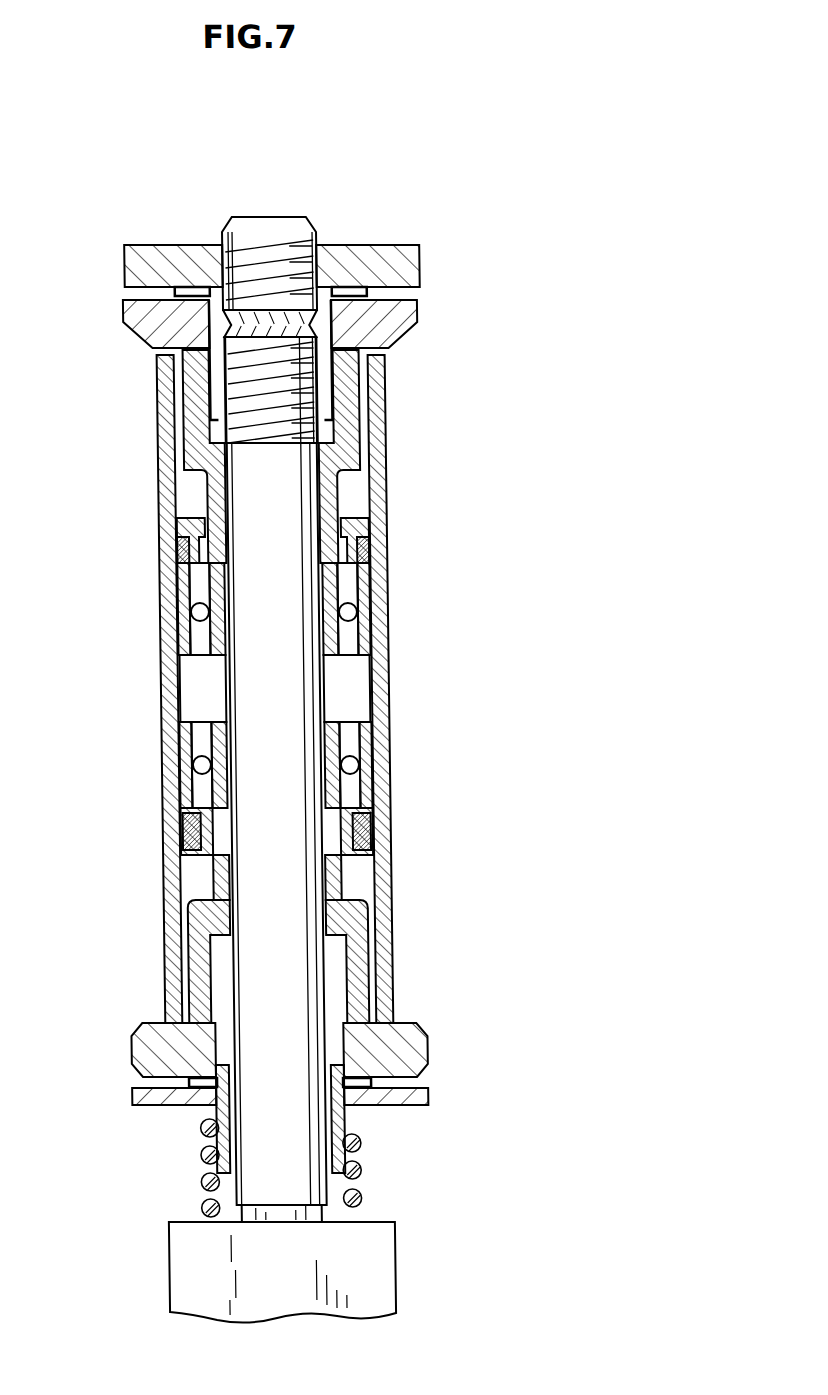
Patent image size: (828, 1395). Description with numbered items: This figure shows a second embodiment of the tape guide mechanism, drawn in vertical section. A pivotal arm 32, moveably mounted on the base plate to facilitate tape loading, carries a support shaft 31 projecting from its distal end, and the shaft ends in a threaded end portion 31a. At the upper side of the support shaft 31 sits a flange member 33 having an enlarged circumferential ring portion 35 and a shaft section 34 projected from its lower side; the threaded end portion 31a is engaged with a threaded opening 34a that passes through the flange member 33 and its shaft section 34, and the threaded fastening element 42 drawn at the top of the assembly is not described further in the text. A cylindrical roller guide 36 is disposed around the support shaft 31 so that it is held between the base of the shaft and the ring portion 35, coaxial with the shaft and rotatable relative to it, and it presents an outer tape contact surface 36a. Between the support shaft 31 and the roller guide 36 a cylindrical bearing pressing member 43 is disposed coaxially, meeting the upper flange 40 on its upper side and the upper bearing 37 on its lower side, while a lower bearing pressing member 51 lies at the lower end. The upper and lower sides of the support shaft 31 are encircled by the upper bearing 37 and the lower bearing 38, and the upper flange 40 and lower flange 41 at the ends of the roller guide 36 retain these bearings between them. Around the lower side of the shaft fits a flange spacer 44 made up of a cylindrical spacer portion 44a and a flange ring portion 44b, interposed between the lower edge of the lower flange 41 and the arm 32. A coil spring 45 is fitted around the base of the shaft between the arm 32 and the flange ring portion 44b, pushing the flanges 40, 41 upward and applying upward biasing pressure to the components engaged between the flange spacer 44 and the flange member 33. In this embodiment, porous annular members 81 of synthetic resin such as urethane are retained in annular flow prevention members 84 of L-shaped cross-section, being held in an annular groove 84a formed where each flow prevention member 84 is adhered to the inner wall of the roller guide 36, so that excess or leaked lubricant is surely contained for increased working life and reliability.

The support shaft 31 is at (294, 687).
The threaded end portion 31a is at (227, 417).
The pivotal arm 32 is at (170, 1293).
The flange member 33 is at (275, 296).
The shaft section 34 is at (323, 333).
The threaded opening 34a is at (210, 370).
The ring portion 35 is at (355, 250).
The cylindrical roller guide 36 is at (263, 689).
The outer tape contact surface 36a is at (153, 712).
The upper bearing 37 is at (355, 630).
The lower bearing 38 is at (358, 757).
The upper flange 40 is at (136, 310).
The lower flange 41 is at (144, 1040).
The bolt 42 is at (265, 237).
The bearing pressing member 43 is at (345, 412).
The flange spacer 44 is at (278, 1141).
The cylindrical spacer portion 44a is at (188, 1172).
The flange ring portion 44b is at (369, 1100).
The coil spring 45 is at (341, 1195).
The lower bearing pressing member 51 is at (343, 957).
The porous annular member 81 is at (370, 550).
The annular flow prevention member 84 is at (340, 522).
The annular groove 84a is at (175, 553).